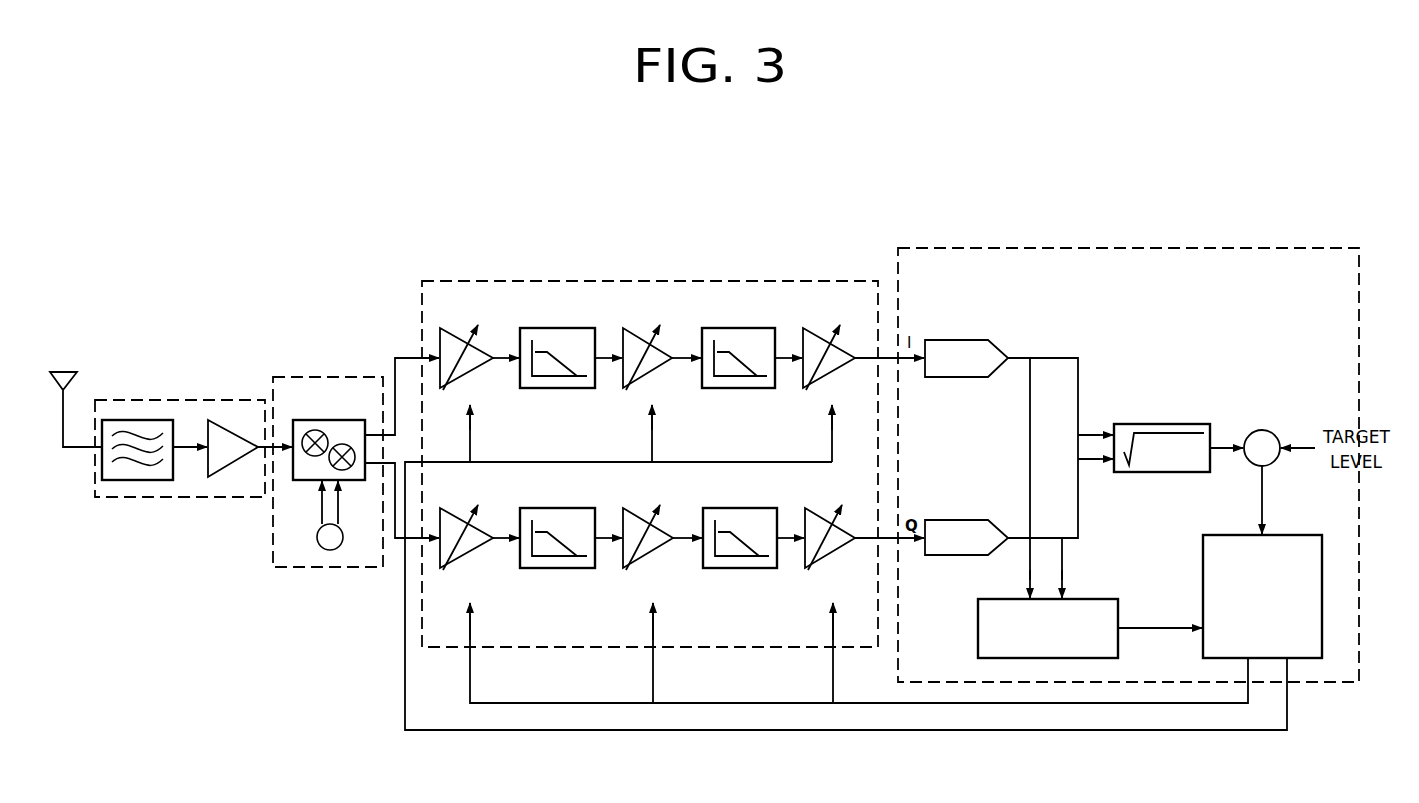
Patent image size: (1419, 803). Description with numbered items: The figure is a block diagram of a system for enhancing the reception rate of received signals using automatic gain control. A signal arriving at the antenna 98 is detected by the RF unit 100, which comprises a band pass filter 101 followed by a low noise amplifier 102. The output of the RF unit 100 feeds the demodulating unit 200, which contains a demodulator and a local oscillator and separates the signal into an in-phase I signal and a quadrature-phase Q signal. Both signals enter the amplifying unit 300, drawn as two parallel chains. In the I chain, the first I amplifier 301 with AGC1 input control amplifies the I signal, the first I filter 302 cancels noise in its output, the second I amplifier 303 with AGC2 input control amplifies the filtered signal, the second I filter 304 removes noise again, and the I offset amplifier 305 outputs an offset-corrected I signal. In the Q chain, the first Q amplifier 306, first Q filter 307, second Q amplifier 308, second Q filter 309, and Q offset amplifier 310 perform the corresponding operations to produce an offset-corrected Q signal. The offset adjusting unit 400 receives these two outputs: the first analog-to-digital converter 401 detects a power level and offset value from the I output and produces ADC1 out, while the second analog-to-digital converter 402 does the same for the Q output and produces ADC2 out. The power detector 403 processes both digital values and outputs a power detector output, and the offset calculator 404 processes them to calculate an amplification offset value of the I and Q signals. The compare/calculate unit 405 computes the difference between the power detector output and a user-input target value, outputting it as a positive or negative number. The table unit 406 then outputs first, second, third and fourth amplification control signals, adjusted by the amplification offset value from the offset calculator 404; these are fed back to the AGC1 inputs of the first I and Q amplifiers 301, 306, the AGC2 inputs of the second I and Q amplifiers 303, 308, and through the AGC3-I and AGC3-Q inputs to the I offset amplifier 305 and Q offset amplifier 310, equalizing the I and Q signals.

The antenna 98 is at (72, 372).
The RF unit 100 is at (182, 497).
The band pass filter 101 is at (137, 418).
The low noise amplifier 102 is at (218, 418).
The demodulating unit 200 is at (330, 567).
The amplifying unit 300 is at (563, 281).
The first I amplifier 301 is at (465, 297).
The first I filter 302 is at (560, 388).
The second I amplifier 303 is at (650, 295).
The second I filter 304 is at (740, 388).
The I offset amplifier 305 is at (818, 295).
The first Q amplifier 306 is at (485, 523).
The first Q filter 307 is at (560, 568).
The second Q amplifier 308 is at (665, 523).
The second Q filter 309 is at (742, 568).
The Q offset amplifier 310 is at (848, 527).
The offset adjusting unit 400 is at (1137, 248).
The first analog-to-digital converter 401 is at (953, 340).
The second analog-to-digital converter 402 is at (953, 520).
The power detector 403 is at (1162, 423).
The offset calculator 404 is at (1105, 598).
The compare/calculate unit 405 is at (1262, 428).
The table unit 406 is at (1300, 535).